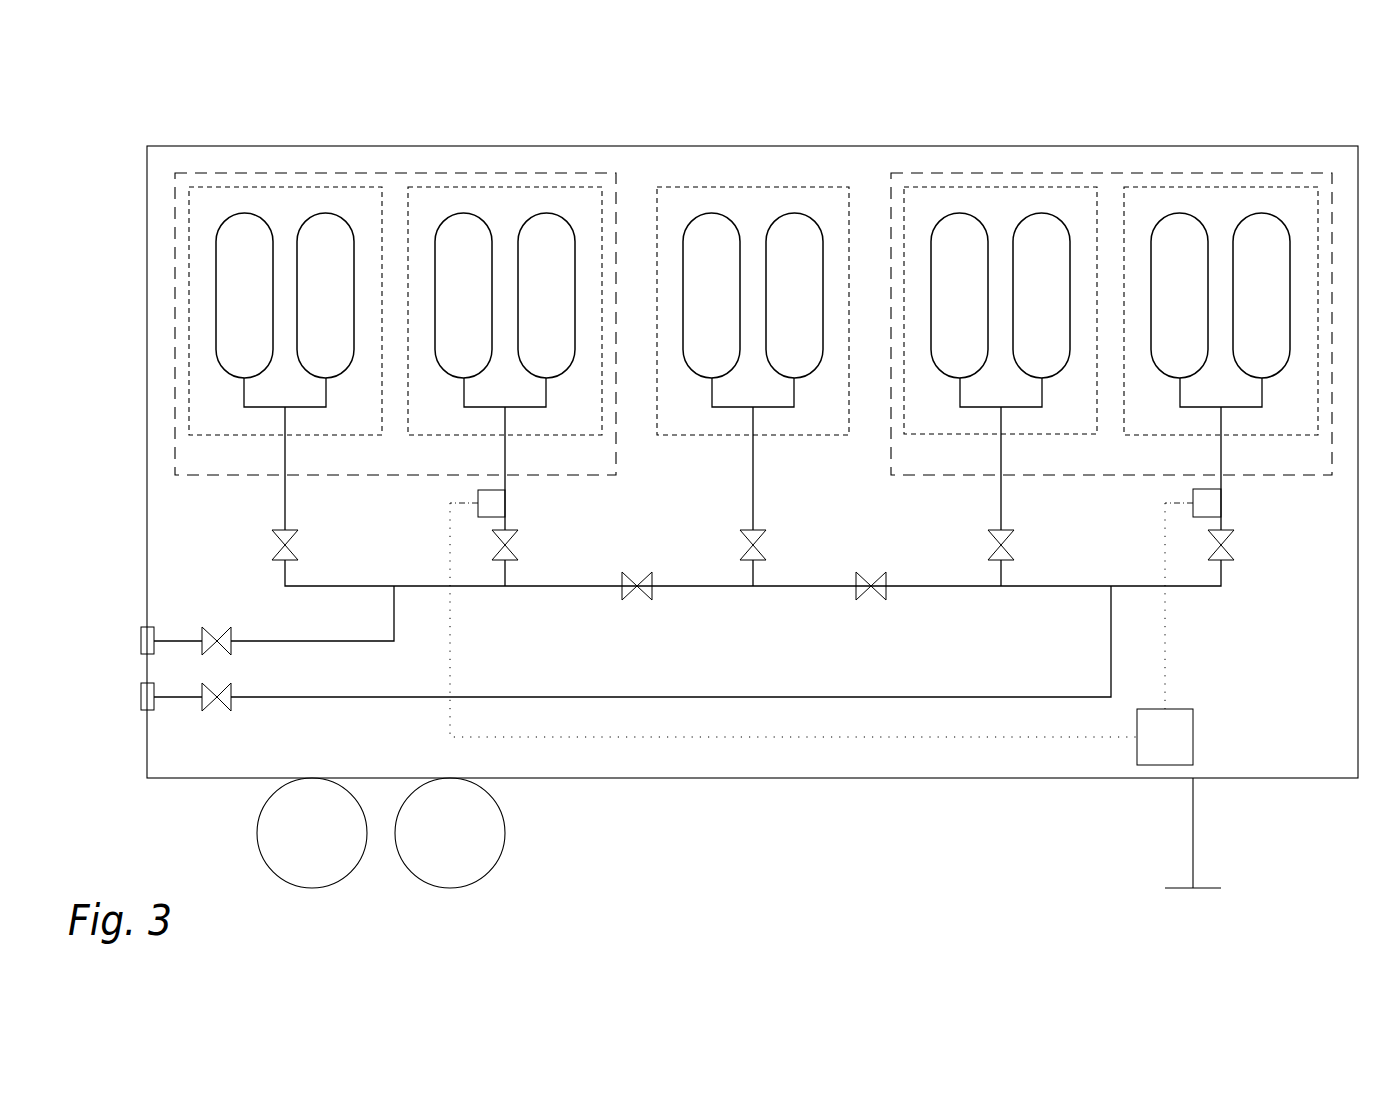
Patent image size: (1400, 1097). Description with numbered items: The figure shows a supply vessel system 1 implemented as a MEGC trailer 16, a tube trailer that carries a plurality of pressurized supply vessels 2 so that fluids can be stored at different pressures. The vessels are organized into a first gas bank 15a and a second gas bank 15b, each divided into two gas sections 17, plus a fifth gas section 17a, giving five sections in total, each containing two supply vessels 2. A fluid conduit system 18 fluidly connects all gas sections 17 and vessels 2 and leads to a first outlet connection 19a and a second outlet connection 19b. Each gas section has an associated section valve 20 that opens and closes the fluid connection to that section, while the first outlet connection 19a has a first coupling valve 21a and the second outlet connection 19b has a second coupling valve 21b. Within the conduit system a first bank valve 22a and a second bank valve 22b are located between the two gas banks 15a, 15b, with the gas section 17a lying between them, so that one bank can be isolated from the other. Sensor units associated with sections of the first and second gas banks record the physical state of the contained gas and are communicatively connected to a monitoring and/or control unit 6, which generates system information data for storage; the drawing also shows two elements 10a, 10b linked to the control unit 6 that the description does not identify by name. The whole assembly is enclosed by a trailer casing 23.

The supply vessel system 1 is at (87, 100).
The MEGC trailer 16 is at (726, 425).
The supply vessel 2 is at (753, 371).
The control unit 6 is at (1193, 737).
The pressure sensor 10a is at (478, 497).
The pressure sensor 10b is at (1193, 497).
The first gas bank 15a is at (367, 172).
The second gas bank 15b is at (1108, 172).
The gas section 17 is at (255, 187).
The fifth gas section 17a is at (750, 187).
The fluid conduit system 18 is at (1288, 632).
The first outlet connection 19a is at (141, 640).
The second outlet connection 19b is at (141, 696).
The section valve 20 is at (300, 537).
The first coupling valve 21a is at (217, 627).
The second coupling valve 21b is at (220, 711).
The first bank valve 22a is at (630, 572).
The second bank valve 22b is at (858, 572).
The trailer casing 23 is at (1365, 173).